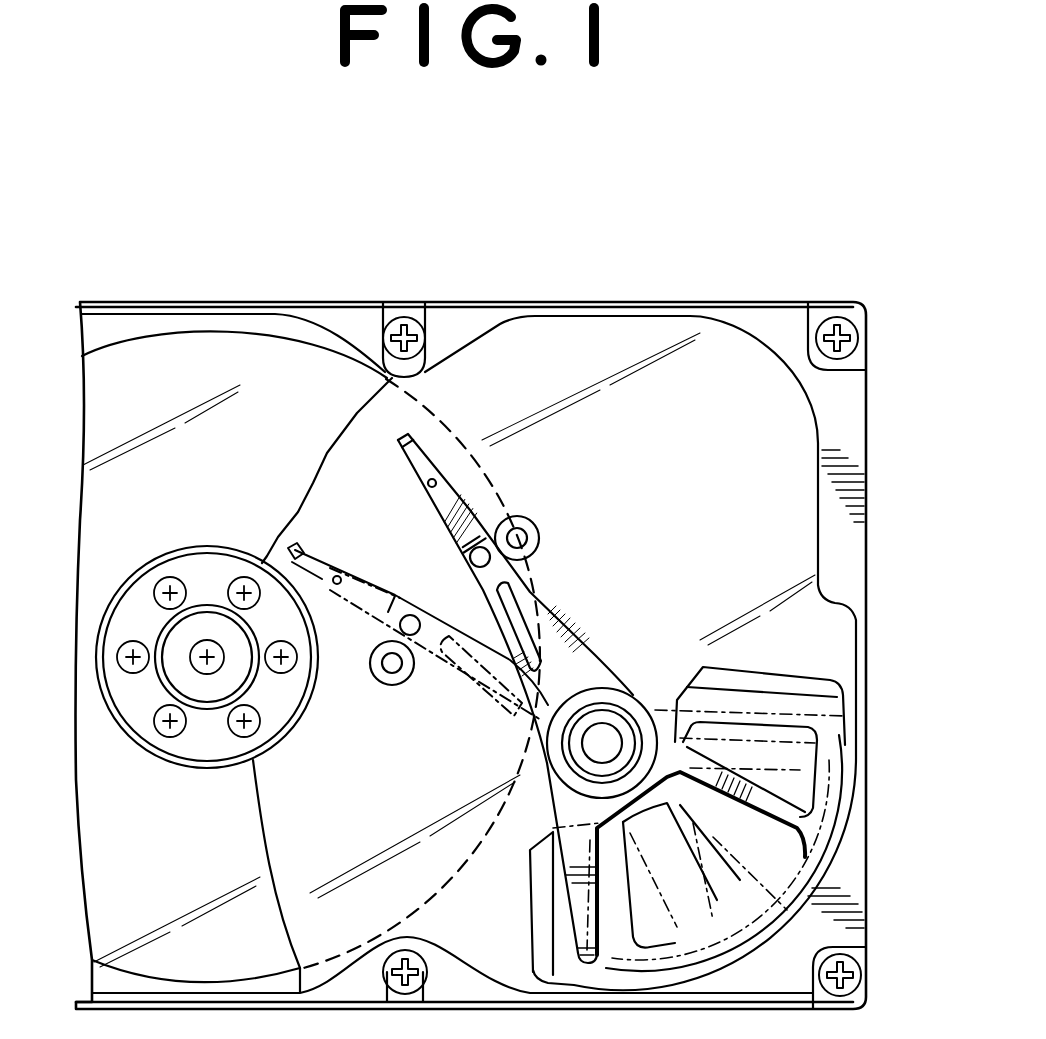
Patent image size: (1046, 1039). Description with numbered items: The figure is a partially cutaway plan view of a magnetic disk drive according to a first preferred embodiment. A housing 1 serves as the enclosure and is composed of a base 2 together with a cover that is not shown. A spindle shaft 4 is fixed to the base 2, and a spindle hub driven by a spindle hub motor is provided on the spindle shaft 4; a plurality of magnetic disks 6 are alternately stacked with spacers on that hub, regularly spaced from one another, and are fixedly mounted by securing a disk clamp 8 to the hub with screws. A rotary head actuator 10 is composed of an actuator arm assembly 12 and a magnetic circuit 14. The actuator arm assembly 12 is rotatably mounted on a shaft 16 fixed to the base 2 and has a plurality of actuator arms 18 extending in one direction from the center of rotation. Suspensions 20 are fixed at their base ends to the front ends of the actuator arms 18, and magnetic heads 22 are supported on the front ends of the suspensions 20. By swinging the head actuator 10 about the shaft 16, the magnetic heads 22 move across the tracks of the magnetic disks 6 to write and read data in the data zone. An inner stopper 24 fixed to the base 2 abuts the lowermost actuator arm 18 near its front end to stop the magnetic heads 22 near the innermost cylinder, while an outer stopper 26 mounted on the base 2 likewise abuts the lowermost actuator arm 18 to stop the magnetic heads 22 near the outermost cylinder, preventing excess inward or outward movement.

The housing 1 is at (651, 298).
The base 2 is at (845, 412).
The spindle shaft 4 is at (205, 620).
The magnetic disks 6 is at (222, 347).
The disk clamp 8 is at (205, 748).
The rotary head actuator 10 is at (542, 669).
The actuator arm assembly 12 is at (548, 595).
The magnetic circuit 14 is at (838, 725).
The shaft 16 is at (604, 738).
The actuator arms 18 is at (558, 627).
The suspensions 20 is at (452, 490).
The magnetic heads 22 is at (400, 442).
The inner stopper 24 is at (388, 688).
The outer stopper 26 is at (524, 520).